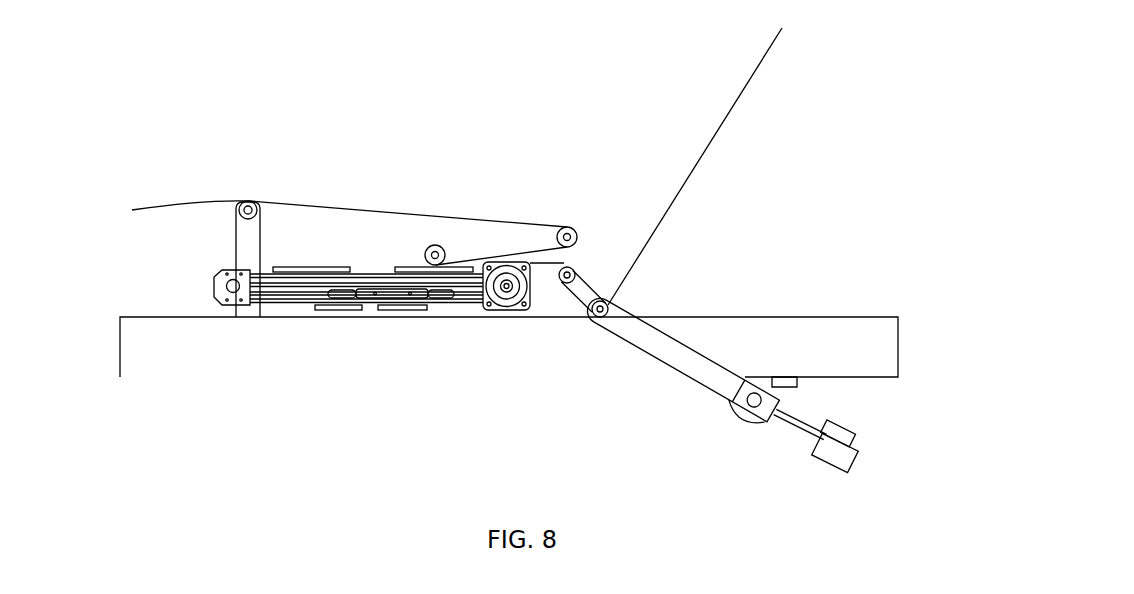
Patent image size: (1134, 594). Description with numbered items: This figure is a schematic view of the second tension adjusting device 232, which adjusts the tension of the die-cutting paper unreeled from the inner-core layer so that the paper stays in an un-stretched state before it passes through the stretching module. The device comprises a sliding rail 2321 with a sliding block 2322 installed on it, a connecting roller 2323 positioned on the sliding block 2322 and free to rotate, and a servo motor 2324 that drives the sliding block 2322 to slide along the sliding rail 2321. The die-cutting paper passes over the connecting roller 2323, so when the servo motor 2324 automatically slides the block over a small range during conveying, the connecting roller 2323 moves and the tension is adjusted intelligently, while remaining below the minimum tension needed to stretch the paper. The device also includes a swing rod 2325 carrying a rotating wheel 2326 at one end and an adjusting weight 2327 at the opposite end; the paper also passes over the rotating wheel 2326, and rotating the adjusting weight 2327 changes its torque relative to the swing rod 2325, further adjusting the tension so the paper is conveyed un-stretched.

The second tension adjusting device 232 is at (447, 80).
The sliding rail 2321 is at (375, 269).
The sliding block 2322 is at (413, 268).
The connecting roller 2323 is at (437, 245).
The servo motor 2324 is at (512, 305).
The swing rod 2325 is at (686, 353).
The rotating wheel 2326 is at (603, 300).
The adjusting weight 2327 is at (849, 428).